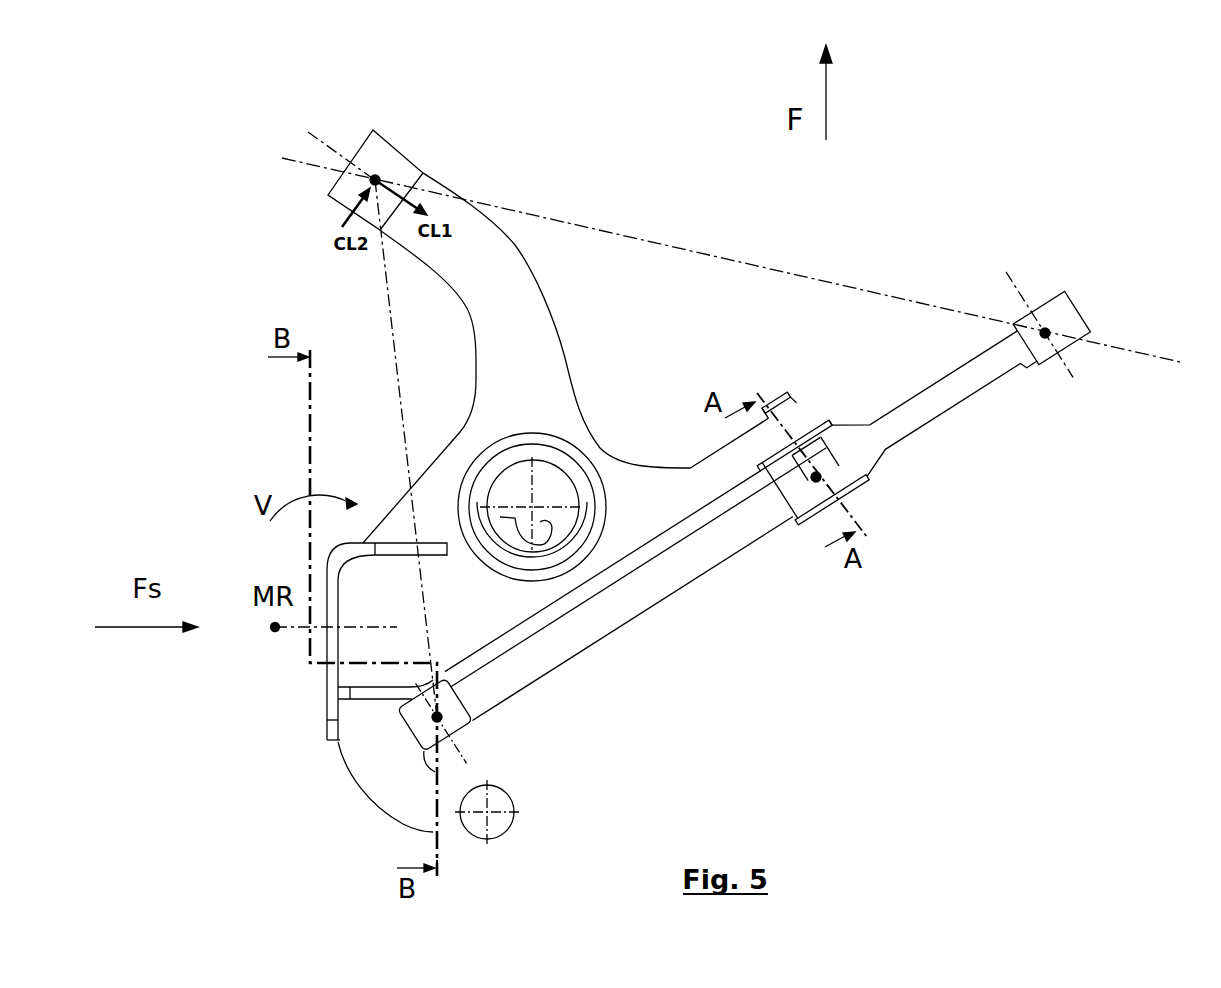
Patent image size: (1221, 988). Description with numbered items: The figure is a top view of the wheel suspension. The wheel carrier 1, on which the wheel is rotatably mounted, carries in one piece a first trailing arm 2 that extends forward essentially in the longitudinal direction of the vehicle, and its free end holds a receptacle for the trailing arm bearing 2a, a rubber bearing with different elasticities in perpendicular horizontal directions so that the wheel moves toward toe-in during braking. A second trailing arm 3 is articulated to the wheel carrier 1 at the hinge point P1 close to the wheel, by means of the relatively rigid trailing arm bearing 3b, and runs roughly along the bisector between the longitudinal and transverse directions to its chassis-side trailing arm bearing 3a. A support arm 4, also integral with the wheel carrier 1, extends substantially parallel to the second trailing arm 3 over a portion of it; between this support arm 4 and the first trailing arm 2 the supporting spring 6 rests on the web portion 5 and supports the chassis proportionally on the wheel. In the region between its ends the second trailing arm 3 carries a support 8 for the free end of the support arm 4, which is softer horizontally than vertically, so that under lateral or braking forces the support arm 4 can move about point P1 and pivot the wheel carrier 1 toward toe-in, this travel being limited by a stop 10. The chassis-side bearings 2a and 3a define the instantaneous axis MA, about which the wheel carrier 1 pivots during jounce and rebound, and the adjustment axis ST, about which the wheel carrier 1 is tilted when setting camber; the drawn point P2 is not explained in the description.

The wheel carrier 1 is at (383, 765).
The first trailing arm 2 is at (478, 302).
The trailing arm bearing 2a is at (378, 180).
The second trailing arm 3 is at (653, 588).
The trailing arm bearing 3a is at (1049, 333).
The trailing arm bearing 3b is at (457, 730).
The support arm 4 is at (698, 493).
The web portion 5 is at (447, 480).
The supporting spring 6 is at (497, 452).
The support 8 is at (818, 497).
The stop 10 is at (833, 413).
The hinge point P1 is at (442, 717).
The pivot point P2 is at (821, 478).
The instantaneous axis MA is at (754, 265).
The adjustment axis ST is at (387, 330).